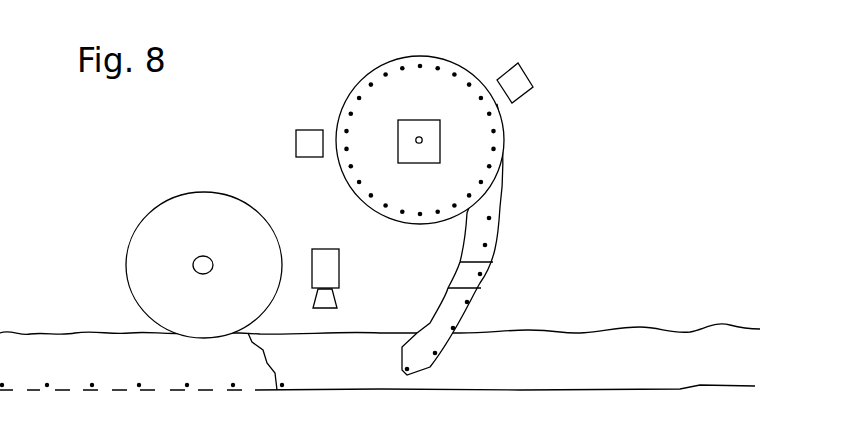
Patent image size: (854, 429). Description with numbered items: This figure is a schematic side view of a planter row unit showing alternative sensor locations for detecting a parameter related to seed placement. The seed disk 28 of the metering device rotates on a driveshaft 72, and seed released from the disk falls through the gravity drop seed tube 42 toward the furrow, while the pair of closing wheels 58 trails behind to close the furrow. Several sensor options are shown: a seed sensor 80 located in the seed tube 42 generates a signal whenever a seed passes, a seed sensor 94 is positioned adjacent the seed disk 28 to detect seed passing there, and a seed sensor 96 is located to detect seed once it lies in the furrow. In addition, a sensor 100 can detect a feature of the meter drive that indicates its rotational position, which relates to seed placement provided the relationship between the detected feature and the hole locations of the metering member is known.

The seed disk 28 is at (337, 107).
The closing wheels 58 is at (151, 213).
The seed sensor 94 is at (532, 78).
The sensor 100 is at (437, 120).
The driveshaft 72 is at (421, 143).
The seed tube 42 is at (500, 222).
The seed sensor 80 is at (490, 267).
The seed sensor 96 is at (339, 265).